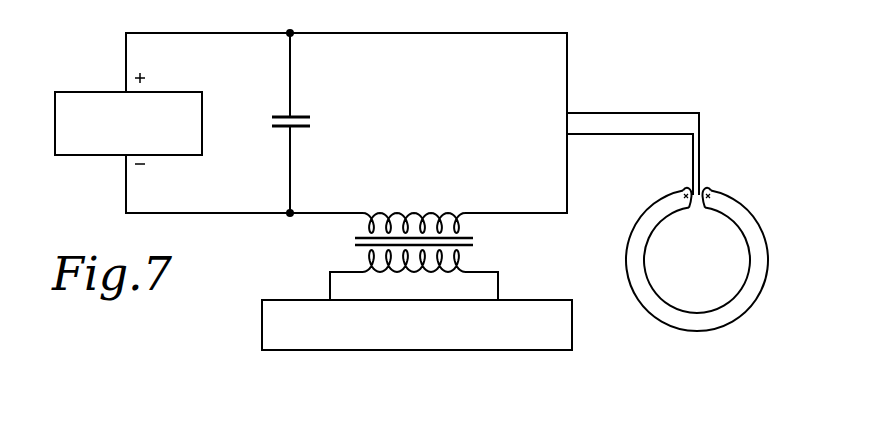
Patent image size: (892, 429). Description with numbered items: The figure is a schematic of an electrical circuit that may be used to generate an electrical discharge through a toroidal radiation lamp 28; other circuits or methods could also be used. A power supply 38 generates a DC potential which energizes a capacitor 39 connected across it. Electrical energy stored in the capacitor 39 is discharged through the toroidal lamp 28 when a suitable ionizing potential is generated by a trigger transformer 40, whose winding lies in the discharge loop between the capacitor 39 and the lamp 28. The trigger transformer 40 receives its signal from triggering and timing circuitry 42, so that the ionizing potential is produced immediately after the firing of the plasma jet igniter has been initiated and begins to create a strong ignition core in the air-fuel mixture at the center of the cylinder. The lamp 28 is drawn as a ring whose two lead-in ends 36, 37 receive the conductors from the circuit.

The ring-shaped discharge tube 28 is at (762, 224).
The electrode 36 is at (722, 190).
The electrode 37 is at (668, 193).
The power source 38 is at (202, 115).
The capacitor 39 is at (300, 116).
The transformer coil 40 is at (412, 213).
The base plate 42 is at (535, 300).